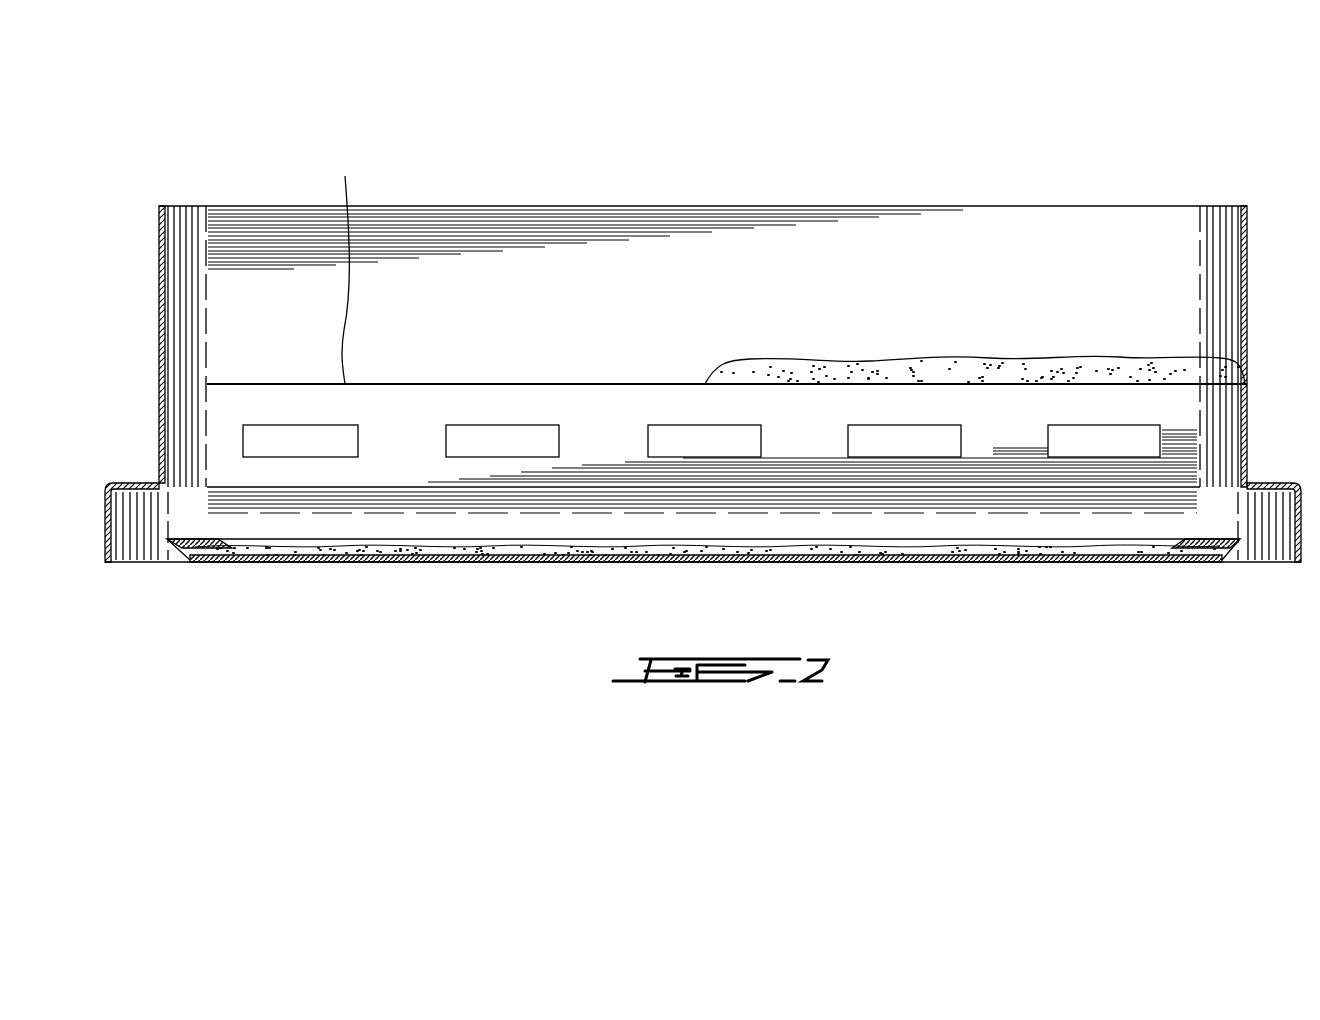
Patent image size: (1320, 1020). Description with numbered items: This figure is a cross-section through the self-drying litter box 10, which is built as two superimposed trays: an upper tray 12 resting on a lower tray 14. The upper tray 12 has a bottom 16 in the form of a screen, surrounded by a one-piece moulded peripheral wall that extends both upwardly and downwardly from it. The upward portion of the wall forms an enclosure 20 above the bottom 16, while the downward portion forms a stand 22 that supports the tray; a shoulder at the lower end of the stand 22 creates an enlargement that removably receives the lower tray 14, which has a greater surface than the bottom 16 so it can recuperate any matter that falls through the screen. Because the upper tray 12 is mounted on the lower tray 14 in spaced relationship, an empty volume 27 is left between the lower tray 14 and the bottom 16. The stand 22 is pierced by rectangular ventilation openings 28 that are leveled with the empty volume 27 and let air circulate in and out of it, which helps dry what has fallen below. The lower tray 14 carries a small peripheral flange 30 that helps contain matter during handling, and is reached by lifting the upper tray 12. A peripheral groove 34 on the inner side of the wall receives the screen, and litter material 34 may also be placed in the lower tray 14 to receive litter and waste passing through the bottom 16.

The self-drying litter box 10 is at (908, 139).
The upper tray 12 is at (157, 353).
The lower tray 14 is at (194, 565).
The bottom 16 is at (345, 267).
The enclosure 20 is at (1248, 266).
The stand 22 is at (1262, 486).
The empty volume 27 is at (1213, 438).
The rectangular ventilation openings 28 is at (498, 440).
The peripheral flange 30 is at (1228, 563).
The litter material 34 is at (1247, 384).